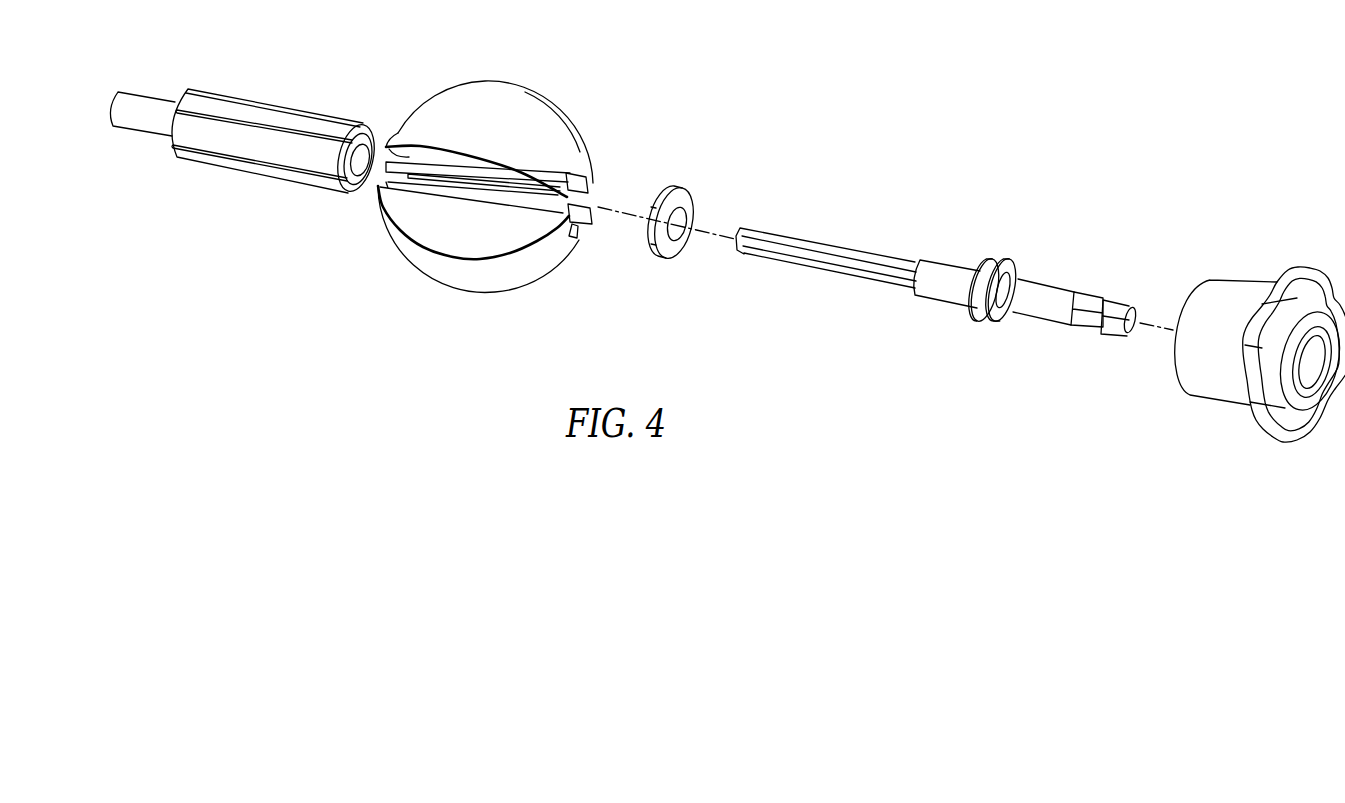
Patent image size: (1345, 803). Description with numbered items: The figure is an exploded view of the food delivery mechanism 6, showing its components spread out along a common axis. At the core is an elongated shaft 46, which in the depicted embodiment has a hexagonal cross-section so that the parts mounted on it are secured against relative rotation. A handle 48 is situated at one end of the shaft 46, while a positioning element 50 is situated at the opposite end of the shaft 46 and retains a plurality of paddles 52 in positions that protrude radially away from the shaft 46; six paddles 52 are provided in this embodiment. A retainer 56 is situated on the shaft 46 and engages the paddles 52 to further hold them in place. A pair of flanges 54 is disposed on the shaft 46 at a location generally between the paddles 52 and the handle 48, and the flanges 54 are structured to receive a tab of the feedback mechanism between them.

The food delivery mechanism 6 is at (787, 134).
The elongated shaft 46 is at (845, 245).
The handle 48 is at (1235, 292).
The positioning element 50 is at (193, 133).
The paddles 52 is at (392, 140).
The flanges 54 is at (988, 258).
The retainer 56 is at (682, 202).